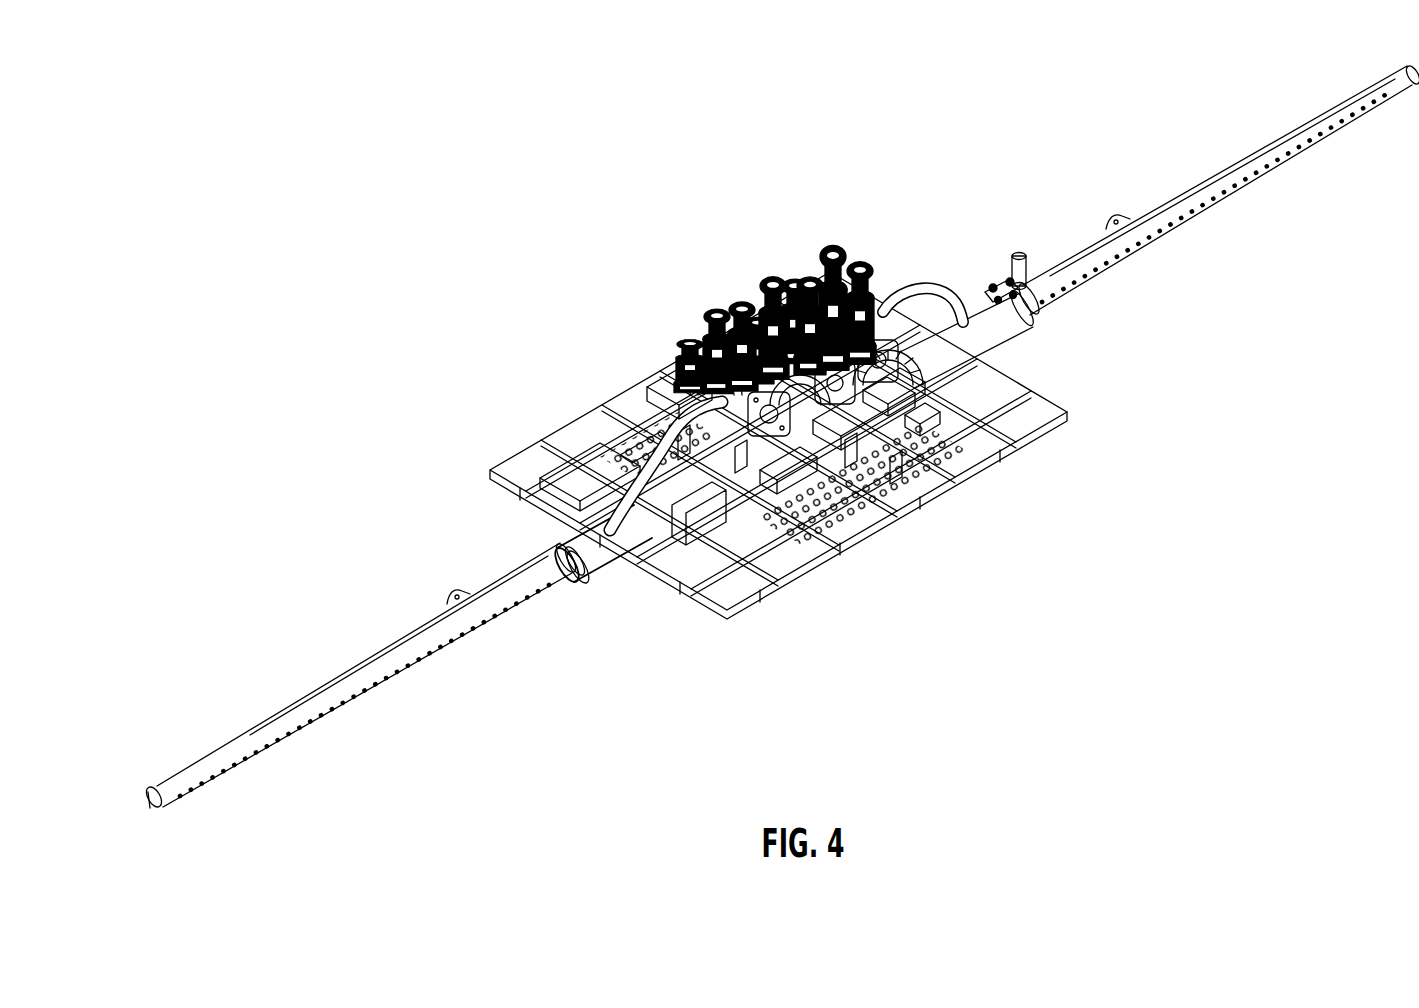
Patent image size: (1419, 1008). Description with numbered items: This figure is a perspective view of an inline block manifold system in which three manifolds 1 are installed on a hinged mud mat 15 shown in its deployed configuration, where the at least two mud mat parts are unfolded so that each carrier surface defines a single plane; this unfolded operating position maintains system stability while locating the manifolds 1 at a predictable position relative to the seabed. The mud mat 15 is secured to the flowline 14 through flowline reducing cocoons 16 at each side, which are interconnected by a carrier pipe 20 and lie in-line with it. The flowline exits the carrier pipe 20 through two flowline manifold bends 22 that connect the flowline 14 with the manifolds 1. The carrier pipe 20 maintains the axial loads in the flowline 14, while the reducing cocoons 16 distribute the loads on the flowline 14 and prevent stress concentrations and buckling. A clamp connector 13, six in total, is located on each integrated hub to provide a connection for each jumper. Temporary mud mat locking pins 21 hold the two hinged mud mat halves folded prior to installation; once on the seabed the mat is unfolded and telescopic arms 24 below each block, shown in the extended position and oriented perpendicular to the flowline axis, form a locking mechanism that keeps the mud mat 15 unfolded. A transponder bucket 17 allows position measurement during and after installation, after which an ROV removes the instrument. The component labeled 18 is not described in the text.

The manifold 1 is at (845, 250).
The clamp connector 13 is at (875, 343).
The flowline 14 is at (145, 798).
The hinged mud mat 15 is at (890, 495).
The flowline reducing cocoon 16 is at (1280, 140).
The transponder bucket 17 is at (1020, 258).
The clamp 18 is at (993, 290).
The carrier pipe 20 is at (625, 540).
The temporary mud mat locking pin 21 is at (585, 500).
The flowline manifold bend 22 is at (905, 292).
The telescopic arm 24 is at (668, 385).